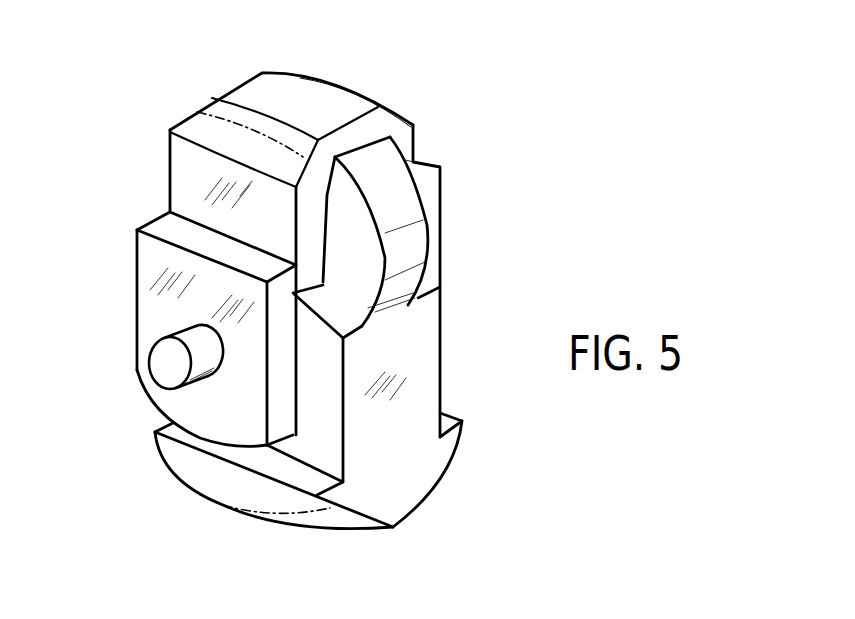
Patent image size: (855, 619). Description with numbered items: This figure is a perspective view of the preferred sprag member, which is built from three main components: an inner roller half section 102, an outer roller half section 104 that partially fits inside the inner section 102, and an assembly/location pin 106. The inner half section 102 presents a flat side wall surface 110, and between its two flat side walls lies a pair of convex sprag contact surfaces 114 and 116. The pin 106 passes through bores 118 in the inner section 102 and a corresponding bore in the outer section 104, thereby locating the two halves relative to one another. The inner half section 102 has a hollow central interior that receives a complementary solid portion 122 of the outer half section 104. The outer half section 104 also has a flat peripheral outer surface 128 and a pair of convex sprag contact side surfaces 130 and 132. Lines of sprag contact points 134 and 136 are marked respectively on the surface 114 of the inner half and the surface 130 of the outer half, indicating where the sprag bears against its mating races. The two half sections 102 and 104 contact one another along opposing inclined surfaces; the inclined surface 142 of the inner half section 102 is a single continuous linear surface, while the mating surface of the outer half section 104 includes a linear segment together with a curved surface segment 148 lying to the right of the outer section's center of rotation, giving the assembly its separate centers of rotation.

The inner roller half section 102 is at (252, 90).
The outer roller half section 104 is at (432, 333).
The assembly/location pin 106 is at (162, 325).
The flat side wall surface 110 is at (177, 185).
The convex sprag contact surface 114 is at (270, 123).
The convex sprag contact surface 116 is at (378, 110).
The bore 118 is at (185, 310).
The solid portion 122 is at (350, 197).
The flat peripheral outer surface 128 is at (360, 528).
The convex sprag contact side surface 130 is at (287, 517).
The convex sprag contact side surface 132 is at (455, 440).
The line of sprag contact points 134 is at (202, 113).
The line of sprag contact points 136 is at (253, 510).
The inclined surface 142 is at (323, 288).
The curved surface segment 148 is at (337, 302).